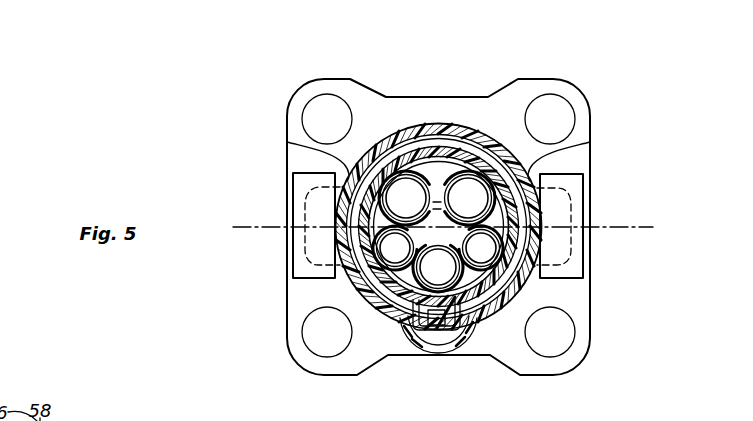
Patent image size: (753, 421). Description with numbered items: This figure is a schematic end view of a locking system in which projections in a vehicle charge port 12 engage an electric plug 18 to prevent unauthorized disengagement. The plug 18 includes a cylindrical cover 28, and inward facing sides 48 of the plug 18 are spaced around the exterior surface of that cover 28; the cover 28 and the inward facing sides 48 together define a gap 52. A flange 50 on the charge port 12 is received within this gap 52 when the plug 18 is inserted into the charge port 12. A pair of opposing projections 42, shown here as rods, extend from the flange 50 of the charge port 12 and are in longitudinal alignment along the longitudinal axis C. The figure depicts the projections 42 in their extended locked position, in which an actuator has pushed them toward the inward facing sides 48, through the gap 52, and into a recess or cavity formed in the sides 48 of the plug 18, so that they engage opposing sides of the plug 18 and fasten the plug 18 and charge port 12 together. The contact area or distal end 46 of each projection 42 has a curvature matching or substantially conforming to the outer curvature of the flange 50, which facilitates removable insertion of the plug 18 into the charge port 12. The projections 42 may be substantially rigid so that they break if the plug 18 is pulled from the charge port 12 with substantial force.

The charge port 12 is at (458, 97).
The plug 18 is at (313, 282).
The cylindrical cover 28 is at (390, 133).
The projections 42 is at (306, 208).
The distal end 46 is at (292, 240).
The inward facing sides 48 is at (325, 174).
The flange 50 is at (445, 125).
The gap 52 is at (342, 282).
The longitudinal axis C is at (608, 227).